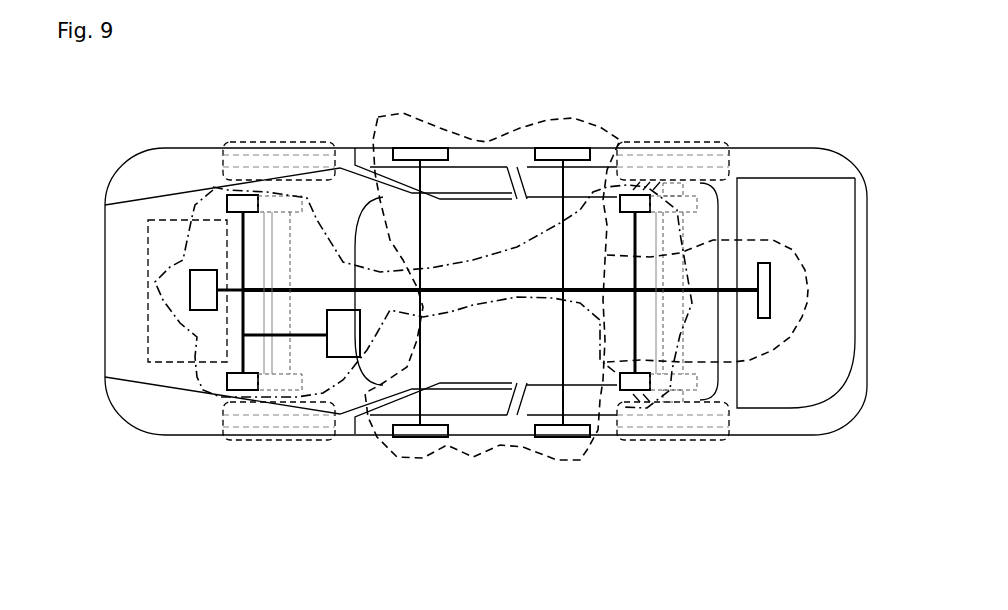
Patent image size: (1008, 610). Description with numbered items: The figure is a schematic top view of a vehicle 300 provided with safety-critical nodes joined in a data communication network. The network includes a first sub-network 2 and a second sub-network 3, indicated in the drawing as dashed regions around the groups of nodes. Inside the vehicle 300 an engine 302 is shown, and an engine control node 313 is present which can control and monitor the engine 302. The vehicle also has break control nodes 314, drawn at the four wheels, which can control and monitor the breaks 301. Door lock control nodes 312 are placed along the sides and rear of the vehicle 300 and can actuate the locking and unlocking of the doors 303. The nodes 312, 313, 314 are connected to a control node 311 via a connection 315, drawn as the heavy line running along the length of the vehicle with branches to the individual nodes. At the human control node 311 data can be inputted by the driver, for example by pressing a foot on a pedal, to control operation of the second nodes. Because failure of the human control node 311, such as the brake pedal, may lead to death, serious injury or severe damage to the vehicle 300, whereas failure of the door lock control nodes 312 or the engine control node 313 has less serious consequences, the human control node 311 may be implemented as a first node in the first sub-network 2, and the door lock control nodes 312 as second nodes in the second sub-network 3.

The first sub-network 2 is at (252, 186).
The second sub-network 3 is at (600, 132).
The vehicle 300 is at (155, 407).
The breaks 301 is at (282, 210).
The engine 302 is at (205, 244).
The doors 303 is at (485, 152).
The control node 311 is at (357, 325).
The door lock control nodes 312 is at (418, 148).
The engine control node 313 is at (200, 290).
The break control nodes 314 is at (247, 205).
The connection 315 is at (580, 292).